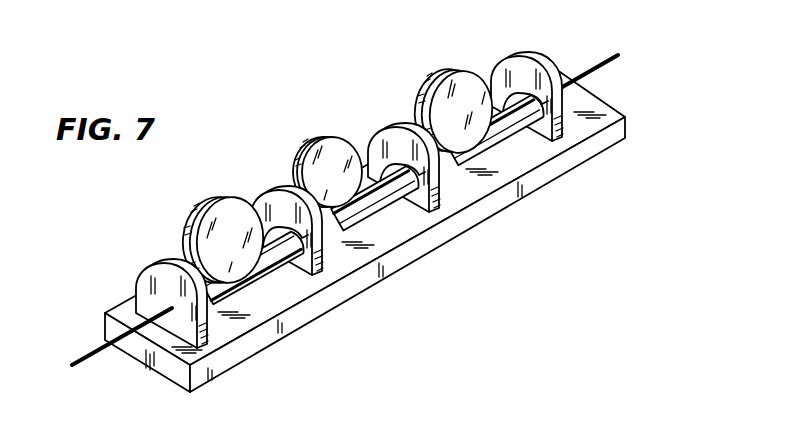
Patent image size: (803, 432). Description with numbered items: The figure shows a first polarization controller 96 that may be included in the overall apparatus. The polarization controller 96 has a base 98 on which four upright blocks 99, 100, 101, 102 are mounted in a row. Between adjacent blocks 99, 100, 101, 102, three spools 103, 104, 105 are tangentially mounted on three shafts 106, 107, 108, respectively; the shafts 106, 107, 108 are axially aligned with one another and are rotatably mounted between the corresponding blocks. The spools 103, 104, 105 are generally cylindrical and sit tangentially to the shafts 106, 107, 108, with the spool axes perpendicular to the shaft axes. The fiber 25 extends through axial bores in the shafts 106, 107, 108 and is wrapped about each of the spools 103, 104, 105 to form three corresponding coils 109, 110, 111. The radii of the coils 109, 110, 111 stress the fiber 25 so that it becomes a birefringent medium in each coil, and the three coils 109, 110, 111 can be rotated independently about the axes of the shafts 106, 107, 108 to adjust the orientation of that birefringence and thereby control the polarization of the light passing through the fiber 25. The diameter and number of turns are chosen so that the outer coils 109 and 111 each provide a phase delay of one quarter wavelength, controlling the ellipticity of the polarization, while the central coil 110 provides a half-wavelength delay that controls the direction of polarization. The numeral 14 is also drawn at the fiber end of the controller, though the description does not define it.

The polarization controller 96 is at (278, 74).
The optical fiber 14 is at (590, 63).
The fiber 25 is at (92, 350).
The base 98 is at (374, 204).
The upright block 99 is at (140, 278).
The upright block 100 is at (320, 252).
The upright block 101 is at (378, 149).
The upright block 102 is at (532, 65).
The spool 103 is at (221, 224).
The spool 104 is at (336, 138).
The spool 105 is at (467, 136).
The shaft 106 is at (275, 252).
The shaft 107 is at (376, 208).
The shaft 108 is at (593, 108).
The coil 109 is at (206, 222).
The coil 110 is at (296, 161).
The coil 111 is at (427, 80).